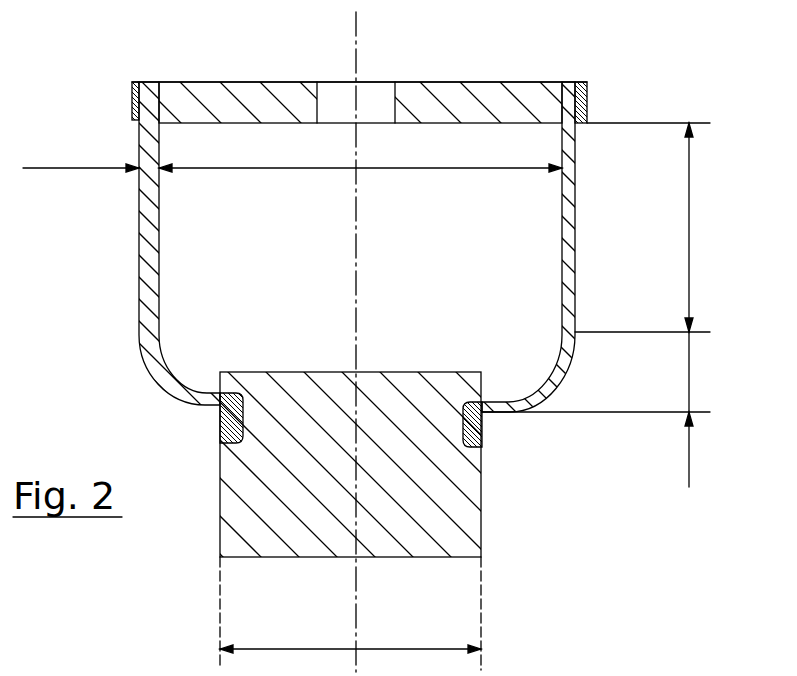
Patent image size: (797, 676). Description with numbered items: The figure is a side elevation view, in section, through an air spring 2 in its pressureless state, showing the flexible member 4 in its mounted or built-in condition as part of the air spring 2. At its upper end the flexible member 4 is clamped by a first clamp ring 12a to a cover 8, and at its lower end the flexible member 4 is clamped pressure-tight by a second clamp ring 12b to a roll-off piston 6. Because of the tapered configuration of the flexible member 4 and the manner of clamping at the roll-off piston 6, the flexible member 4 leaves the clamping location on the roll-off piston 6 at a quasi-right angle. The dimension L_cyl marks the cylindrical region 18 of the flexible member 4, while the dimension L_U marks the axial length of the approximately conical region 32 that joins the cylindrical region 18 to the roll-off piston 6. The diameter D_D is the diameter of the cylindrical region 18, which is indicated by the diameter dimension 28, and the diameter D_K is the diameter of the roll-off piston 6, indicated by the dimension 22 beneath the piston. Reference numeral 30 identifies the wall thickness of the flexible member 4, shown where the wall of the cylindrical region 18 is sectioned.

The air spring 2 is at (537, 552).
The flexible member 4 is at (150, 262).
The roll-off piston 6 is at (442, 492).
The cover 8 is at (248, 103).
The first clamp ring 12a is at (137, 100).
The second clamp ring 12b is at (220, 420).
The cylindrical region 18 is at (692, 282).
The piston diameter dimension 22 is at (335, 647).
The cylinder inner diameter dimension 28 is at (463, 170).
The wall thickness 30 is at (150, 167).
The conical region 32 is at (690, 373).